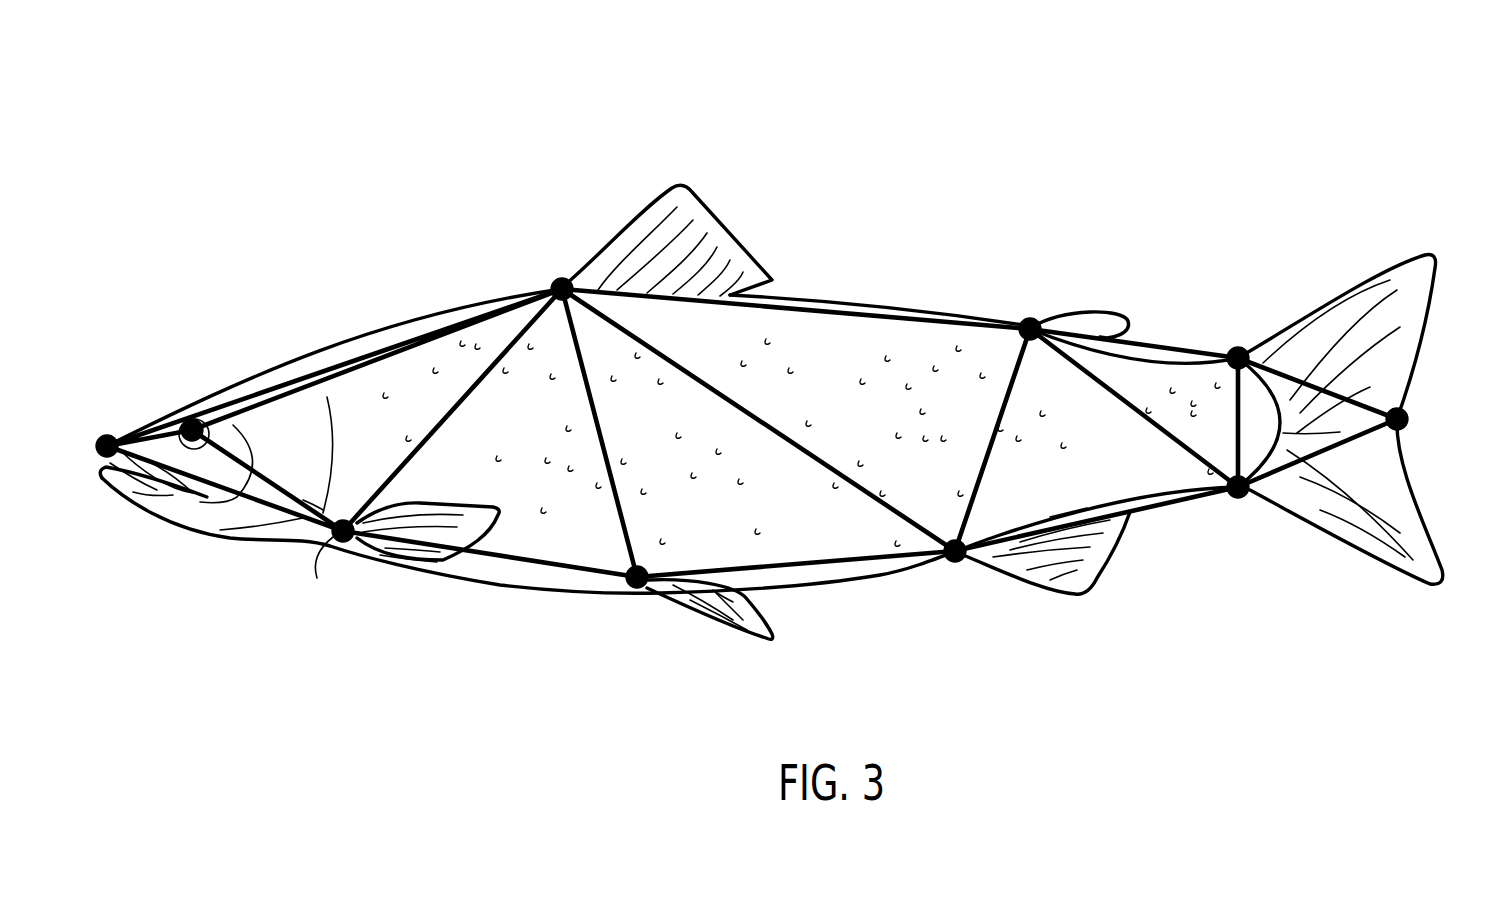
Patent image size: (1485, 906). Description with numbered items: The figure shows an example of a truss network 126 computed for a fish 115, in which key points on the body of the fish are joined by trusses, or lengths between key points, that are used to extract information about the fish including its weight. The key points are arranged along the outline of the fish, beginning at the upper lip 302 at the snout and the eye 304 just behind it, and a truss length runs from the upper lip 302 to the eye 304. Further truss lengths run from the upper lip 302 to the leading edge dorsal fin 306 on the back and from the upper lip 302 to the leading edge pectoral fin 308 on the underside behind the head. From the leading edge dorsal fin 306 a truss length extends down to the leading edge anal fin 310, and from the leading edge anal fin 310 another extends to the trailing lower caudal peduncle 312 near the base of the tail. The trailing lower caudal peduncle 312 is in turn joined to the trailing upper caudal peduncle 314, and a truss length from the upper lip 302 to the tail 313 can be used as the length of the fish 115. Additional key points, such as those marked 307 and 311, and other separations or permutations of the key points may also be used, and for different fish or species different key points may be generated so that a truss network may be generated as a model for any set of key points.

The fish 115 is at (378, 318).
The truss network 126 is at (245, 70).
The upper lip 302 is at (107, 435).
The eye 304 is at (193, 419).
The leading edge dorsal fin 306 is at (559, 279).
The pelvic fin key point 307 is at (636, 588).
The leading edge pectoral fin 308 is at (340, 542).
The leading edge anal fin 310 is at (953, 562).
The adipose fin key point 311 is at (1030, 318).
The trailing lower caudal peduncle 312 is at (1238, 498).
The tail 313 is at (1404, 430).
The trailing upper caudal peduncle 314 is at (1238, 347).